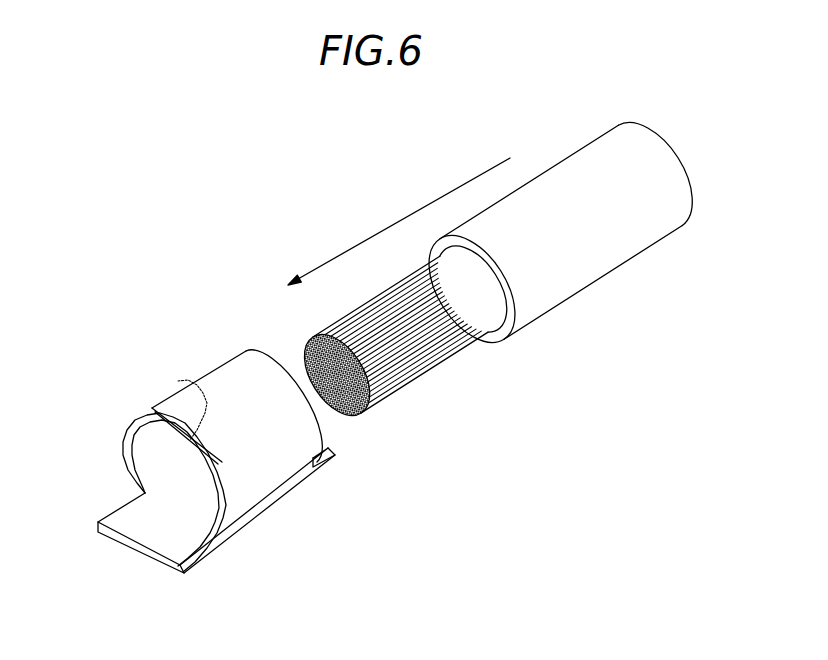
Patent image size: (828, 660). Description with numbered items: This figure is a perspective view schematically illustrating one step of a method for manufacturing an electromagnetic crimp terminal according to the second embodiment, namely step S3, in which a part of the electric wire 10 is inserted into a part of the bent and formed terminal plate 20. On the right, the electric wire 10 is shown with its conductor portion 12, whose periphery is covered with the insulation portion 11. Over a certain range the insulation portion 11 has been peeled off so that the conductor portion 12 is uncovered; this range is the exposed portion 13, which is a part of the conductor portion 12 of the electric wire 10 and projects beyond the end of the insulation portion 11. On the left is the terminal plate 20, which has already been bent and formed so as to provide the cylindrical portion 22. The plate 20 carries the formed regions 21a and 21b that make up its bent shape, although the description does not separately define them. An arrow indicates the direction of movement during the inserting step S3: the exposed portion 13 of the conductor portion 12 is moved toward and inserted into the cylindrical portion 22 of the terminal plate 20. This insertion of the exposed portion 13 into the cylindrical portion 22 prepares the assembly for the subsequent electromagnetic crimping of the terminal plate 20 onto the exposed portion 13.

The electric wire 10 is at (626, 332).
The insulation portion 11 is at (557, 277).
The conductor portion 12 is at (351, 410).
The exposed portion 13 is at (420, 366).
The terminal plate 20 is at (74, 326).
The wire barrel inner piece 21a is at (152, 408).
The wire barrel outer piece 21b is at (175, 382).
The cylindrical portion 22 is at (228, 393).
The inserting step S3 is at (140, 190).